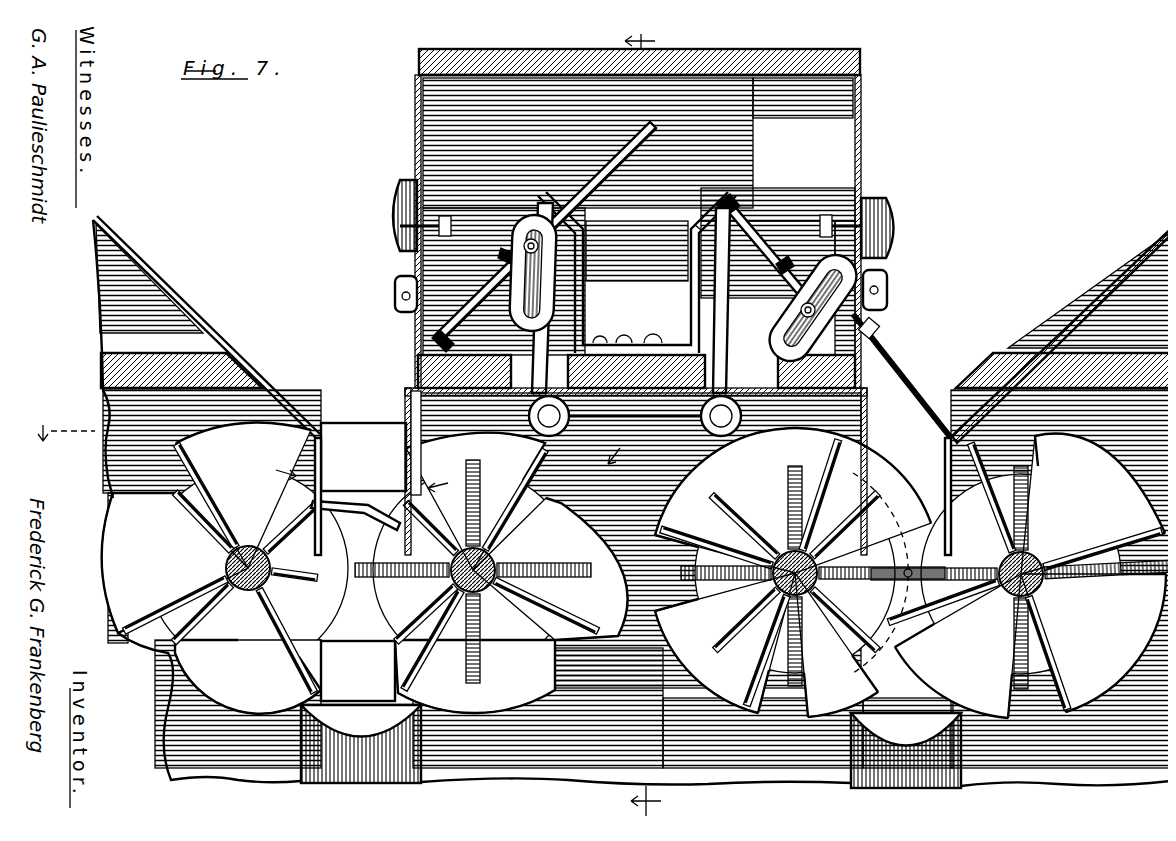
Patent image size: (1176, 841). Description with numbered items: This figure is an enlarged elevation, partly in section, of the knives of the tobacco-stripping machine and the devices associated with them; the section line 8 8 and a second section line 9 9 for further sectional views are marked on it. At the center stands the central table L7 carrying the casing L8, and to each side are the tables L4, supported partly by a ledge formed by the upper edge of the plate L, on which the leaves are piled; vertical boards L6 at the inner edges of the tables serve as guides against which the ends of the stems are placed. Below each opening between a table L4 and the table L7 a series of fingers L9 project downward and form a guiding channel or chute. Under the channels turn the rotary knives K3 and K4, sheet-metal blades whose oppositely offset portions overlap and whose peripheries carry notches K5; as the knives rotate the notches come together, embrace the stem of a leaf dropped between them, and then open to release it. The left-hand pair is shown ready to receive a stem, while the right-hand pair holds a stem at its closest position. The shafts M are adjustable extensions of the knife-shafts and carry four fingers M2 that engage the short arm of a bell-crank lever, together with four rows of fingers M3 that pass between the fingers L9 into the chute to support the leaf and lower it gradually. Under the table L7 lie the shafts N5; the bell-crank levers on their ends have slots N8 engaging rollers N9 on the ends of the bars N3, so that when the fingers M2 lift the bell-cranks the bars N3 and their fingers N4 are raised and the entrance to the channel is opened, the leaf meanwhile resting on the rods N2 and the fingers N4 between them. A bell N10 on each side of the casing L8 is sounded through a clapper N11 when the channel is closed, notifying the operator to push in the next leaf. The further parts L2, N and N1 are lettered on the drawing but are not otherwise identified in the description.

The plate L is at (108, 443).
The pillar L2 is at (380, 763).
The tables L4 is at (93, 360).
The vertical boards L6 is at (180, 283).
The central table L7 is at (623, 353).
The casing L8 is at (638, 218).
The fingers L9 is at (398, 410).
The rotary knives K3 is at (793, 708).
The rotary knives K4 is at (600, 573).
The notches K5 is at (110, 475).
The shafts M is at (262, 562).
The fingers M2 is at (463, 484).
The fingers M3 is at (273, 510).
The lever bar N is at (572, 278).
The rod end nut N1 is at (425, 336).
The rods N2 is at (687, 217).
The bars N3 is at (492, 245).
The fingers N4 is at (625, 133).
The shafts N5 is at (655, 416).
The slots N8 is at (770, 304).
The rollers N9 is at (504, 222).
The bell N10 is at (393, 178).
The clapper N11 is at (385, 279).
The section line 8 is at (643, 427).
The section line 9 is at (320, 448).